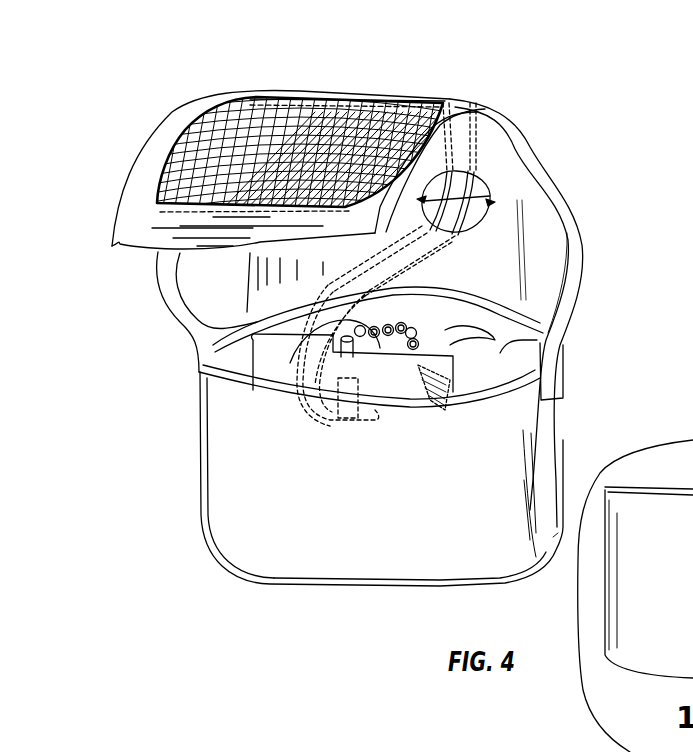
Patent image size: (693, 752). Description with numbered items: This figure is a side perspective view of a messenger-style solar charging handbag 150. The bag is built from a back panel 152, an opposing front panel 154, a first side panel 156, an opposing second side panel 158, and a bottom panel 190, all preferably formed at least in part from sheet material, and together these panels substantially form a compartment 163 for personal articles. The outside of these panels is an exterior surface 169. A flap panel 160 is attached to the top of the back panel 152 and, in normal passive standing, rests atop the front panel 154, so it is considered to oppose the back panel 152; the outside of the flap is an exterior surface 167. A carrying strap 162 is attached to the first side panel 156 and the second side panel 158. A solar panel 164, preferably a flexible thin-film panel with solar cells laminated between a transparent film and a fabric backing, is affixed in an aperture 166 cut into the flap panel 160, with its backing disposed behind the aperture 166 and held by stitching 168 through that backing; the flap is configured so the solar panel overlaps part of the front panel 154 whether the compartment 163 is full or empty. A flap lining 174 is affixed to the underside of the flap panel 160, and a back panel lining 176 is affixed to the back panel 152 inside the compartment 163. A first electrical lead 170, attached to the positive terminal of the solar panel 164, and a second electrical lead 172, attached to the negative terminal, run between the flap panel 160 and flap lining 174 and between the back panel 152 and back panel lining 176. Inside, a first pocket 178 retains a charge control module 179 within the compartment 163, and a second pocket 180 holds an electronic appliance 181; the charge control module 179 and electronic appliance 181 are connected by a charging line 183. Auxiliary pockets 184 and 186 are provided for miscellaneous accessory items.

The solar charging handbag 150 is at (243, 586).
The back panel 152 is at (240, 326).
The front panel 154 is at (285, 586).
The first side panel 156 is at (200, 368).
The second side panel 158 is at (550, 400).
The flap panel 160 is at (137, 249).
The carrying strap 162 is at (163, 293).
The compartment 163 is at (486, 319).
The solar panel 164 is at (256, 115).
The aperture 166 is at (155, 190).
The exterior surface 167 is at (208, 101).
The stitching 168 is at (297, 97).
The exterior surface 169 is at (230, 510).
The first electrical lead 170 is at (461, 196).
The second electrical lead 172 is at (492, 199).
The flap lining 174 is at (506, 126).
The back panel lining 176 is at (510, 308).
The first pocket 178 is at (290, 366).
The charge control module 179 is at (331, 408).
The second pocket 180 is at (540, 443).
The electronic appliance 181 is at (421, 396).
The charging line 183 is at (371, 336).
The auxiliary pocket 184 is at (200, 381).
The auxiliary pocket 186 is at (546, 341).
The bottom panel 190 is at (471, 561).